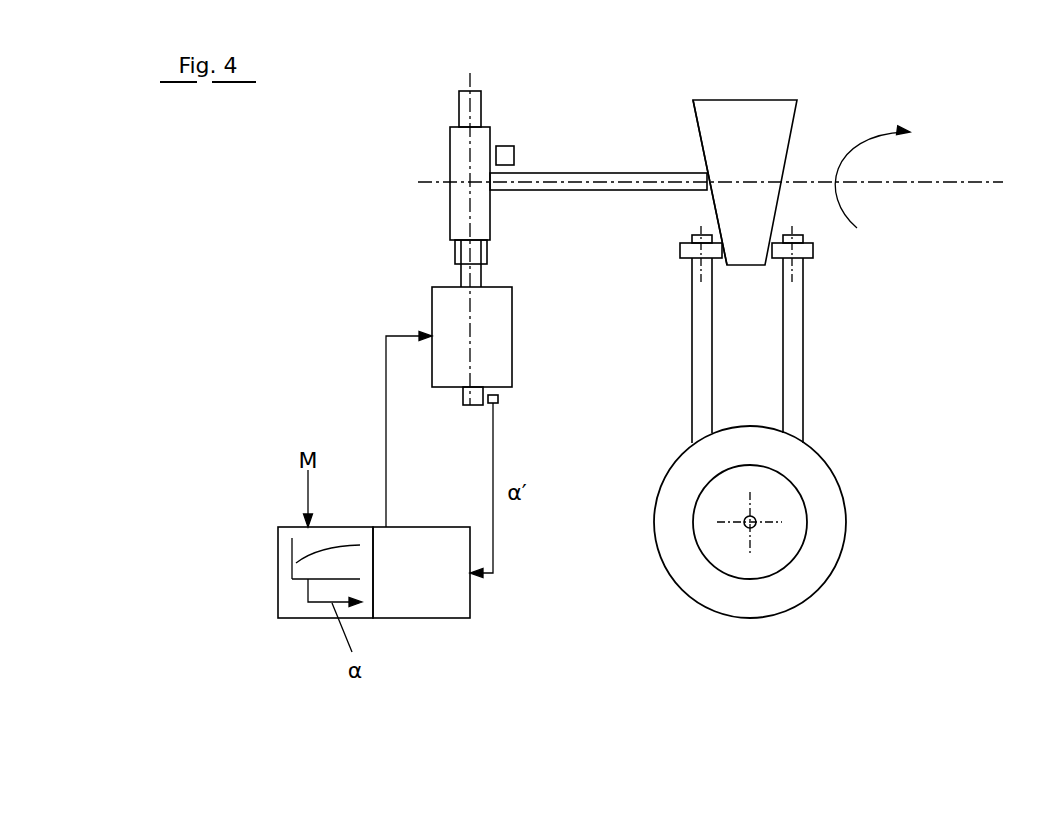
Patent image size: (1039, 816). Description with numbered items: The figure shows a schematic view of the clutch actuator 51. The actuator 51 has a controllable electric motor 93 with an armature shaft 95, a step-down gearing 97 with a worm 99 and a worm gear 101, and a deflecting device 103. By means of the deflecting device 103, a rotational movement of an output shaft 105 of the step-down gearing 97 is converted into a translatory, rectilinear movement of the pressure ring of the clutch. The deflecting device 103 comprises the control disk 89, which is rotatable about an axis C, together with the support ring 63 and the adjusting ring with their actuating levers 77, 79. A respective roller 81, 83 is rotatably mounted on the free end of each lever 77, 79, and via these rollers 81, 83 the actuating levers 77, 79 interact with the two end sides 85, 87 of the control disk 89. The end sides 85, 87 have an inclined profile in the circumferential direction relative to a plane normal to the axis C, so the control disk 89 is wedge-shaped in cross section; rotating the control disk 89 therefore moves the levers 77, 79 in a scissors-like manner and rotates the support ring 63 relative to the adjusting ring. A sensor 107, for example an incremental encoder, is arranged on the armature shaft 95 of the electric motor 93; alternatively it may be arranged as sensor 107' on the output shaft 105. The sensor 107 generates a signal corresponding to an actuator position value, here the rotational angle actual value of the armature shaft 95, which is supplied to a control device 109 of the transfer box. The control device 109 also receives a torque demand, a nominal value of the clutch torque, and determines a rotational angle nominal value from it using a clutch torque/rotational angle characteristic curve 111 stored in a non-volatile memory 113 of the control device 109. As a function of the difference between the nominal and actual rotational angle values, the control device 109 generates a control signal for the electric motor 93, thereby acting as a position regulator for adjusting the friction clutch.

The actuator 51 is at (650, 660).
The support ring 63 is at (825, 512).
The actuating lever 77 is at (790, 347).
The actuating lever 79 is at (703, 358).
The roller 81 is at (763, 270).
The roller 83 is at (690, 252).
The end side 85 is at (805, 102).
The end side 87 is at (688, 128).
The control disk 89 is at (735, 118).
The electric motor 93 is at (450, 305).
The armature shaft 95 is at (468, 400).
The step-down gearing 97 is at (405, 148).
The worm 99 is at (464, 253).
The worm gear 101 is at (462, 203).
The deflecting device 103 is at (669, 211).
The output shaft 105 is at (578, 181).
The sensor 107 is at (536, 392).
The sensor 107' is at (526, 128).
The control device 109 is at (453, 592).
The clutch torque/rotational angle characteristic curve 111 is at (329, 572).
The non-volatile memory 113 is at (283, 605).
The axis A is at (760, 527).
The axis C is at (966, 179).